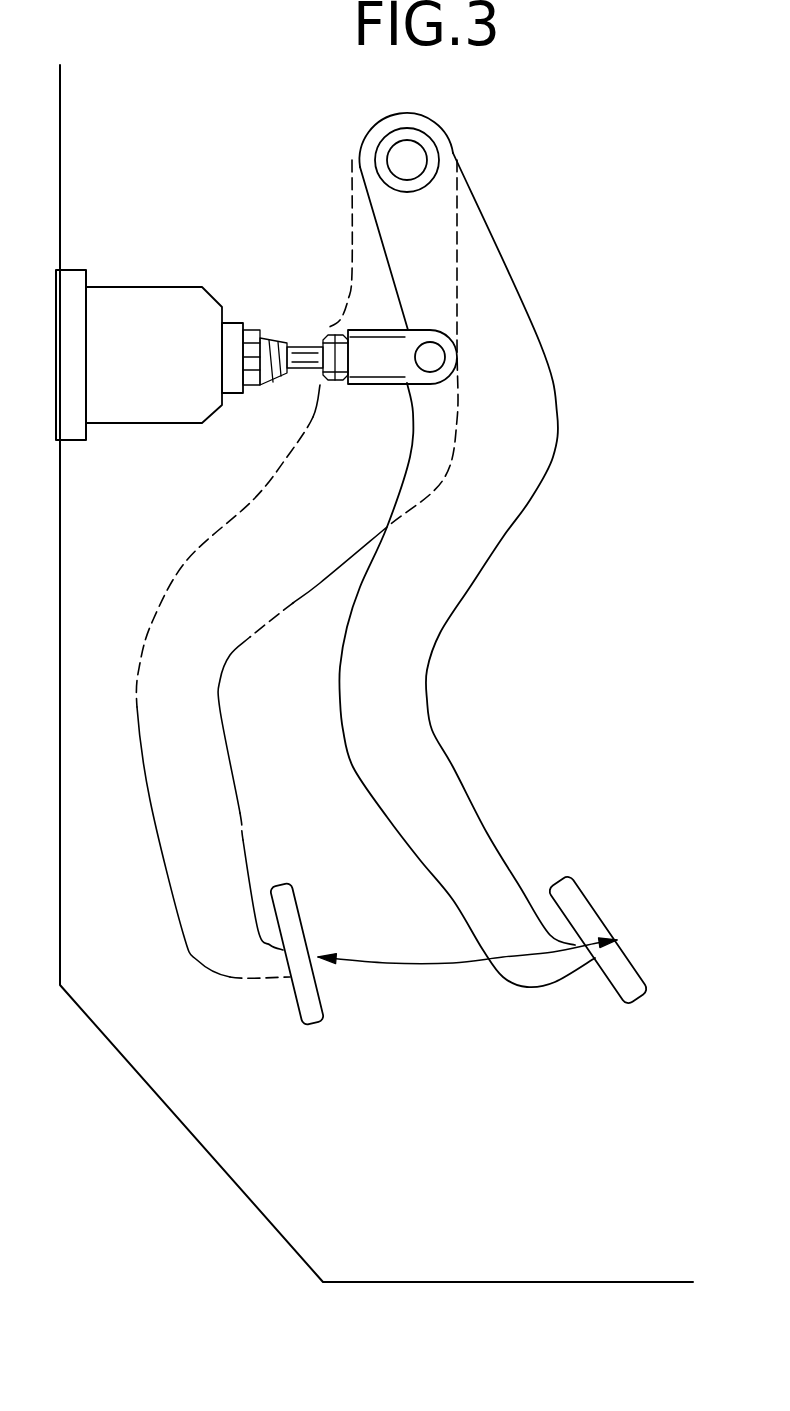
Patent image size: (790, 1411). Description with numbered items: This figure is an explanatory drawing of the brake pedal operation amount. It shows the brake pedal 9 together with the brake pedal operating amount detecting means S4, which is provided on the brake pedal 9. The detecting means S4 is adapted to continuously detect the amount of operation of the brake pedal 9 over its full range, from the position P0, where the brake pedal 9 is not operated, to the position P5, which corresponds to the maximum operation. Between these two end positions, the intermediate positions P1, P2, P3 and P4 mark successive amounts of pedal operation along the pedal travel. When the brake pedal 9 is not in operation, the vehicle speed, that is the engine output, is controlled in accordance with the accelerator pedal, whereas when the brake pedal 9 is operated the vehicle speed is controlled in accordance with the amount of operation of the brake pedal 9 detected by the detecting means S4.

The brake pedal 9 is at (503, 503).
The brake pedal operating amount detecting means S4 is at (305, 178).
The brake pedal non-operated position P0 is at (617, 940).
The brake pedal operation position P1 is at (555, 951).
The brake pedal operation position P2 is at (518, 956).
The brake pedal operation position P3 is at (473, 962).
The brake pedal operation position P4 is at (383, 963).
The brake pedal maximum operation position P5 is at (318, 957).